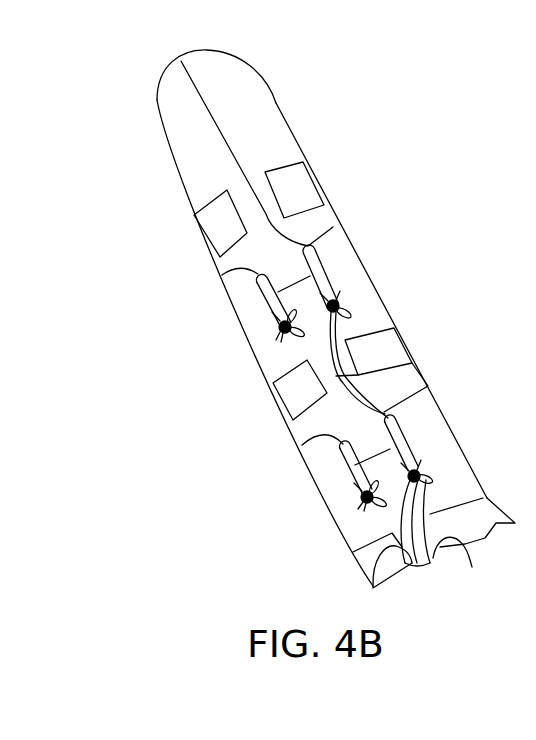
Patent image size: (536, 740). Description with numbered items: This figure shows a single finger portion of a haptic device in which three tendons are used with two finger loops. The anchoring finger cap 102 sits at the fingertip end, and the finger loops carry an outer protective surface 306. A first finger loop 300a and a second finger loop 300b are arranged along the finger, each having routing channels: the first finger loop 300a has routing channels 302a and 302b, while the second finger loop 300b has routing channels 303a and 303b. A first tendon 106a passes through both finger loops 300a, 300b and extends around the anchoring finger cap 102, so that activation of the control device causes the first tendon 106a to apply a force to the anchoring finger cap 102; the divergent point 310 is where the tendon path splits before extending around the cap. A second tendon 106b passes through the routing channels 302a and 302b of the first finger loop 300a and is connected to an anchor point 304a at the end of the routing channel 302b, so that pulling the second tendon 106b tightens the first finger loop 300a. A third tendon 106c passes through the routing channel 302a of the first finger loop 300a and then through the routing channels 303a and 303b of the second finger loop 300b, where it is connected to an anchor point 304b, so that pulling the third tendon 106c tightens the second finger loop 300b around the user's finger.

The anchoring finger cap 102 is at (163, 97).
The outer protective surface 306 is at (285, 113).
The first tendon 106a is at (237, 148).
The second tendon 106b is at (350, 376).
The third tendon 106c is at (332, 233).
The divergent point 310 is at (327, 223).
The first finger loop 300a is at (300, 436).
The second finger loop 300b is at (240, 294).
The routing channel 302a is at (400, 443).
The routing channel 302b is at (352, 472).
The routing channel 303a is at (335, 272).
The routing channel 303b is at (272, 317).
The anchor point 304a is at (363, 502).
The anchor point 304b is at (278, 338).